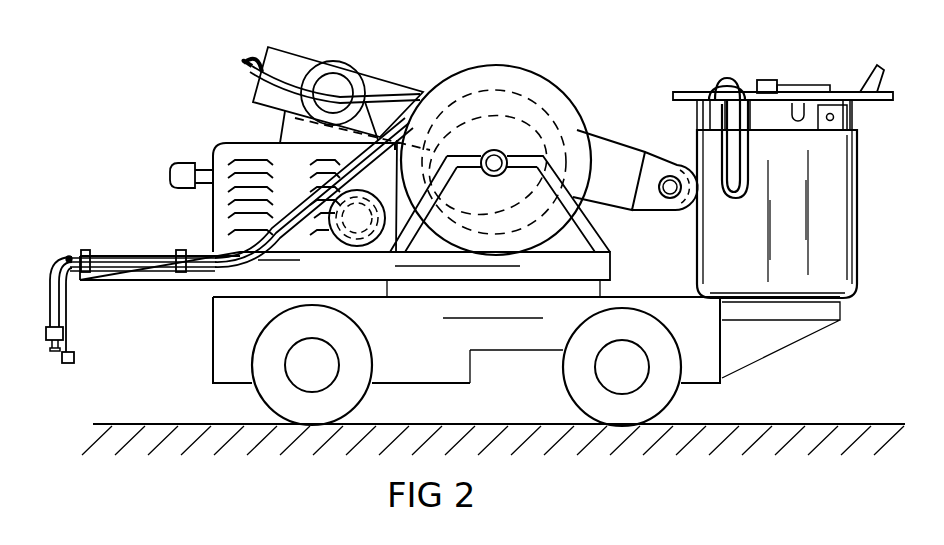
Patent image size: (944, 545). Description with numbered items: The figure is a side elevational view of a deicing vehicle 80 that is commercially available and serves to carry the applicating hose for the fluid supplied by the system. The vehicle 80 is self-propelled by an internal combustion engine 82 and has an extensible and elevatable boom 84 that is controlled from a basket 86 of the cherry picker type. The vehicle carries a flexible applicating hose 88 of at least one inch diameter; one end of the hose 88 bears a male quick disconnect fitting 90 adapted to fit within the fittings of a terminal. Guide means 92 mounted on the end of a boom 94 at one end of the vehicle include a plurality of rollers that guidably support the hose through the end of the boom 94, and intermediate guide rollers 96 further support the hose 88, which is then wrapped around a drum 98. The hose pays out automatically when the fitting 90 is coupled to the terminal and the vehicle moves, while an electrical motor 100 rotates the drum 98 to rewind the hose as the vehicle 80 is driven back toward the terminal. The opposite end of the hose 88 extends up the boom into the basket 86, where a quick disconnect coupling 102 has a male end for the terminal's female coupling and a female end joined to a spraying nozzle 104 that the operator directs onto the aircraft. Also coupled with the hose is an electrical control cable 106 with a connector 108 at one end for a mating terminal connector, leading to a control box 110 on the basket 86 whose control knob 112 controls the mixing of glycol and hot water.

The vehicle 80 is at (571, 76).
The internal combustion engine 82 is at (238, 150).
The extensible and elevatable boom 84 is at (382, 87).
The basket 86 is at (857, 207).
The flexible applicating hose 88 is at (58, 265).
The male quick disconnect fitting 90 is at (52, 345).
The guide means 92 is at (85, 250).
The boom 94 is at (128, 256).
The intermediate guide rollers 96 is at (180, 250).
The drum 98 is at (493, 70).
The electrical motor 100 is at (347, 247).
The quick disconnect coupling 102 is at (760, 80).
The spraying nozzle 104 is at (817, 86).
The electrical control cable 106 is at (277, 83).
The connector 108 is at (75, 357).
The control box 110 is at (828, 121).
The control knob 112 is at (837, 118).